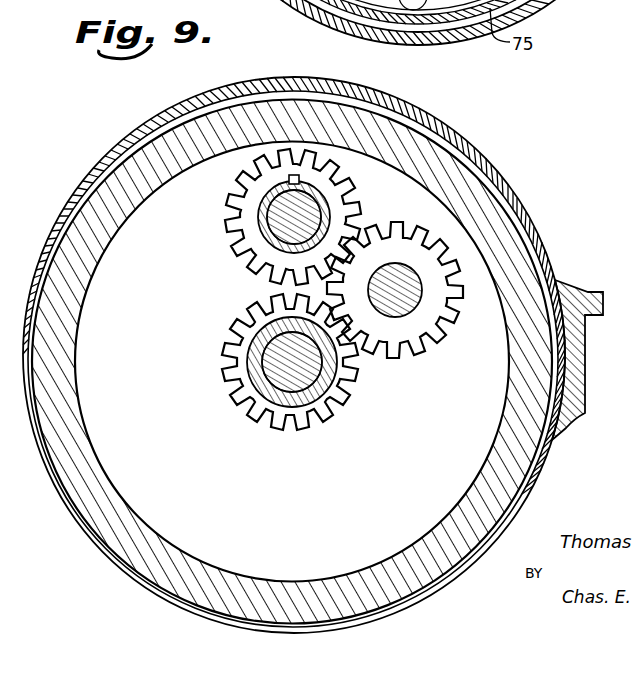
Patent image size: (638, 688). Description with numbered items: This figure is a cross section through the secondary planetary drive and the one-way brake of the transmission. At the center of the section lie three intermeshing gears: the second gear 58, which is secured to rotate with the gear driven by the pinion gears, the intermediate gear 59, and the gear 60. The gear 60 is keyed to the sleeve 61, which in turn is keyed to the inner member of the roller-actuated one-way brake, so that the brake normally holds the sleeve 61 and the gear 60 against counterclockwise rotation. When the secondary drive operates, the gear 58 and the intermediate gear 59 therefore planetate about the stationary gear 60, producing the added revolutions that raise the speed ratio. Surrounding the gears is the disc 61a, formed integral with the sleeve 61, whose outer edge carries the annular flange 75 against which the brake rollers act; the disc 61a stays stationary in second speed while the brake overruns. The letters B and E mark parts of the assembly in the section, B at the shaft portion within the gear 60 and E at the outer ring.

The second gear 58 is at (352, 183).
The intermediate gear 59 is at (455, 312).
The gear 60 is at (355, 390).
The sleeve 61 is at (251, 340).
The disc 61a is at (436, 441).
The annular flange 75 is at (488, 197).
The shaft B is at (272, 376).
The bezel ring E is at (466, 133).